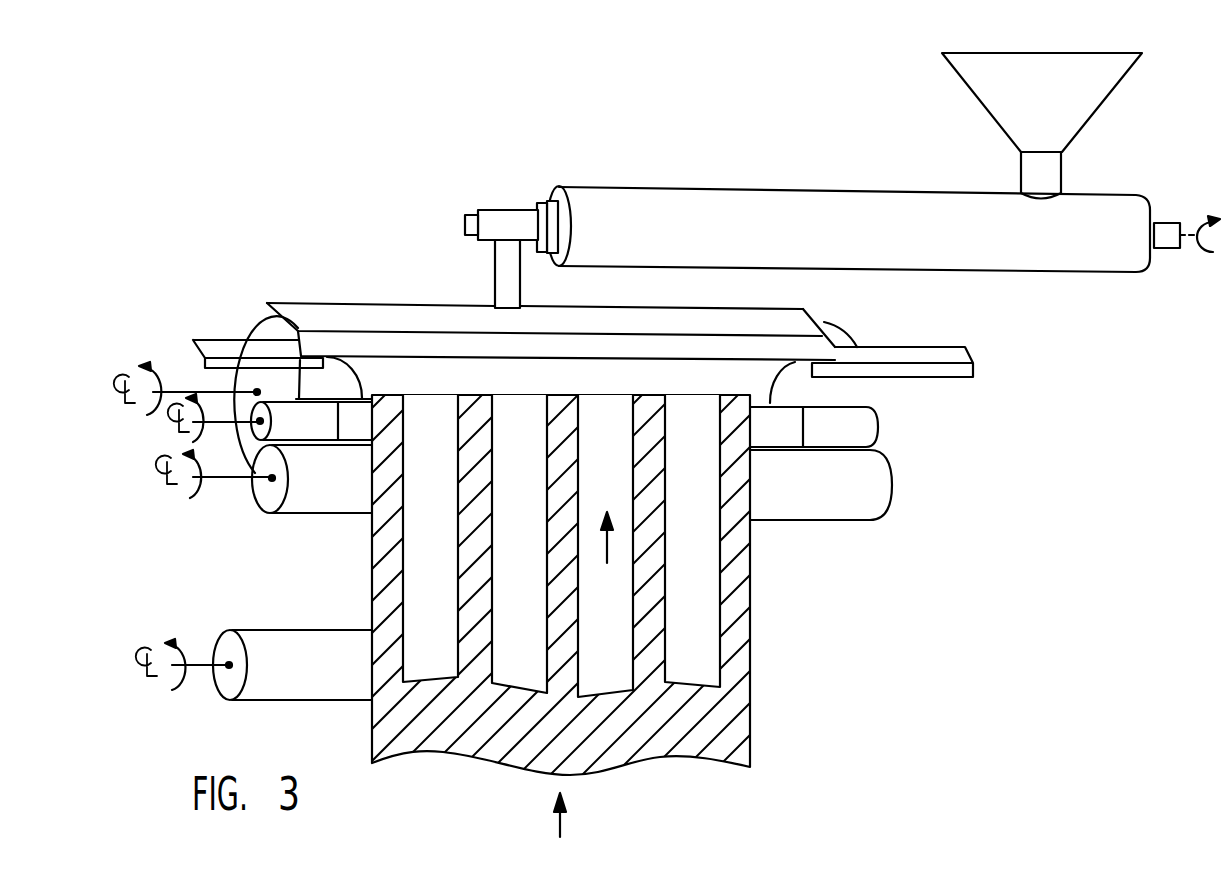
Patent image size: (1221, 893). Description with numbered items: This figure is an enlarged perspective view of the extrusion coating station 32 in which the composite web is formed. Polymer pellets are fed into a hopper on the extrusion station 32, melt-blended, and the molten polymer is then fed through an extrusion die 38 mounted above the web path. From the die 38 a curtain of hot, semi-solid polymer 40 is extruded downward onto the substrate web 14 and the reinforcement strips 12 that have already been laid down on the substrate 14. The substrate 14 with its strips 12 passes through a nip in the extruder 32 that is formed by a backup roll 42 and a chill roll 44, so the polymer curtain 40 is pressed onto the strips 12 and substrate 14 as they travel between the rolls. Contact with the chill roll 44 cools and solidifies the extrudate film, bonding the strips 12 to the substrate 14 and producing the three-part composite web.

The extrusion coating station 32 is at (641, 179).
The extrusion die 38 is at (818, 322).
The chill roll 44 is at (255, 325).
The curtain of hot, semi-solid polymer 40 is at (765, 378).
The backup roll 42 is at (880, 427).
The strips 12 is at (432, 553).
The substrate web 14 is at (737, 732).